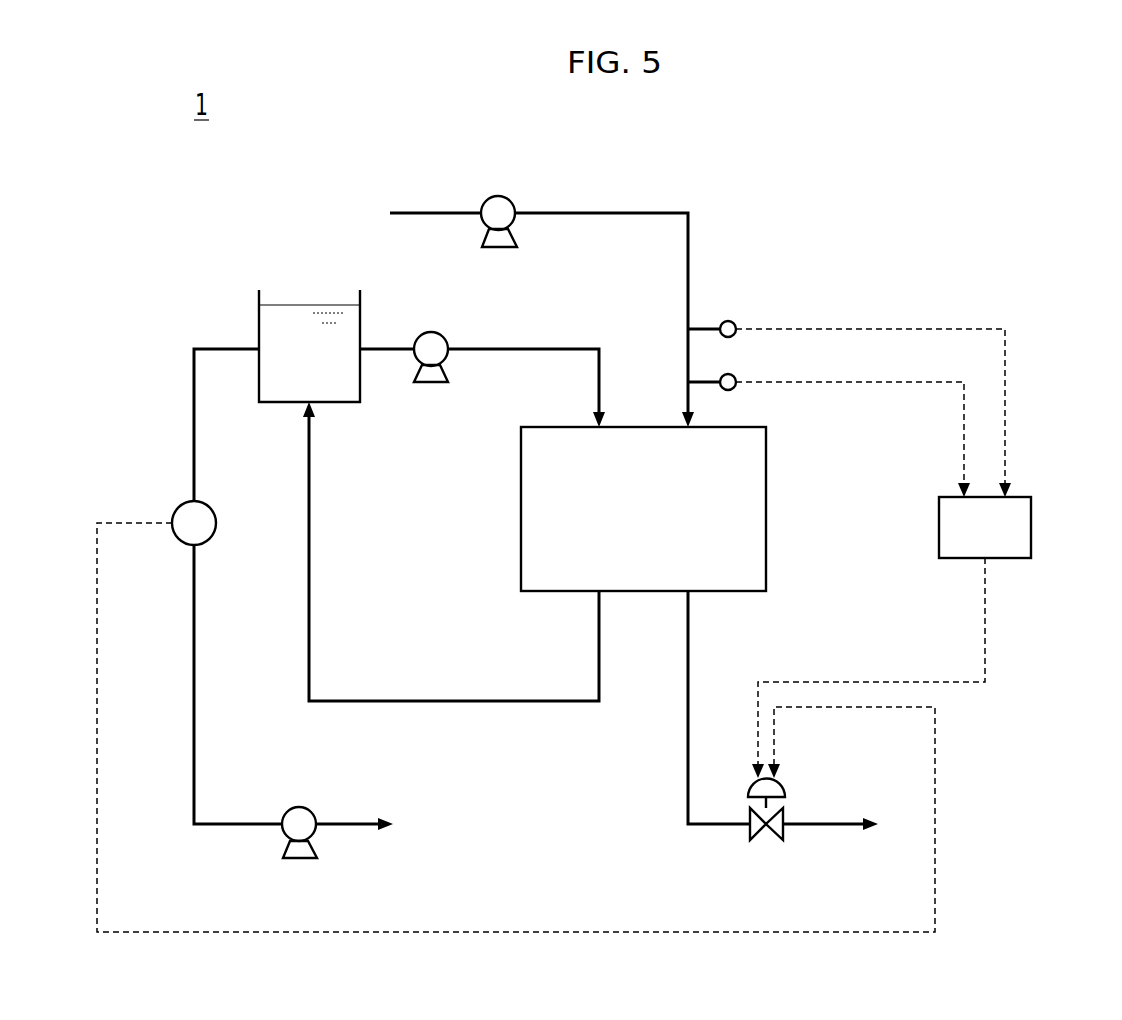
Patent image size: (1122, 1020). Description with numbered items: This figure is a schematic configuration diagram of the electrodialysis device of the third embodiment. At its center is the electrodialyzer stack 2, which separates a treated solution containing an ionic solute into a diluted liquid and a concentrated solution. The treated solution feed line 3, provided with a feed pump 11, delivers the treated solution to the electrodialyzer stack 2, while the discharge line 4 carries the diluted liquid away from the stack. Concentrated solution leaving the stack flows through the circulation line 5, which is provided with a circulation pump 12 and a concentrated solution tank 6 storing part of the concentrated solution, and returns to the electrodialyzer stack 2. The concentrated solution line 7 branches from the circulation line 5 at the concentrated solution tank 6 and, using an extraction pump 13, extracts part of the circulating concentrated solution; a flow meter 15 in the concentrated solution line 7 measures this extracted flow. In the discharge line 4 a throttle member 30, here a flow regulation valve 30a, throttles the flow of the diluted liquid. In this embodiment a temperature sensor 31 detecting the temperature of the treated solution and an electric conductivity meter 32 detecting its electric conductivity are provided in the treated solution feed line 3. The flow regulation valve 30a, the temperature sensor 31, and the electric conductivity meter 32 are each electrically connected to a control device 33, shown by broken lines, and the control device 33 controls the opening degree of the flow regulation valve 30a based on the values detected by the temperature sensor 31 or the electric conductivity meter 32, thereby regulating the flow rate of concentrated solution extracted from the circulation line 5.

The electrodialyzer stack 2 is at (766, 507).
The treated solution feed line 3 is at (688, 254).
The discharge line 4 is at (820, 827).
The circulation line 5 is at (441, 700).
The concentrated solution tank 6 is at (259, 318).
The concentrated solution line 7 is at (194, 690).
The feed pump 11 is at (496, 196).
The circulation pump 12 is at (431, 331).
The extraction pump 13 is at (297, 807).
The flow meter 15 is at (176, 508).
The throttle member 30 is at (820, 786).
The flow regulation valve 30a is at (786, 786).
The temperature sensor 31 is at (731, 321).
The electric conductivity meter 32 is at (735, 390).
The control device 33 is at (1031, 527).